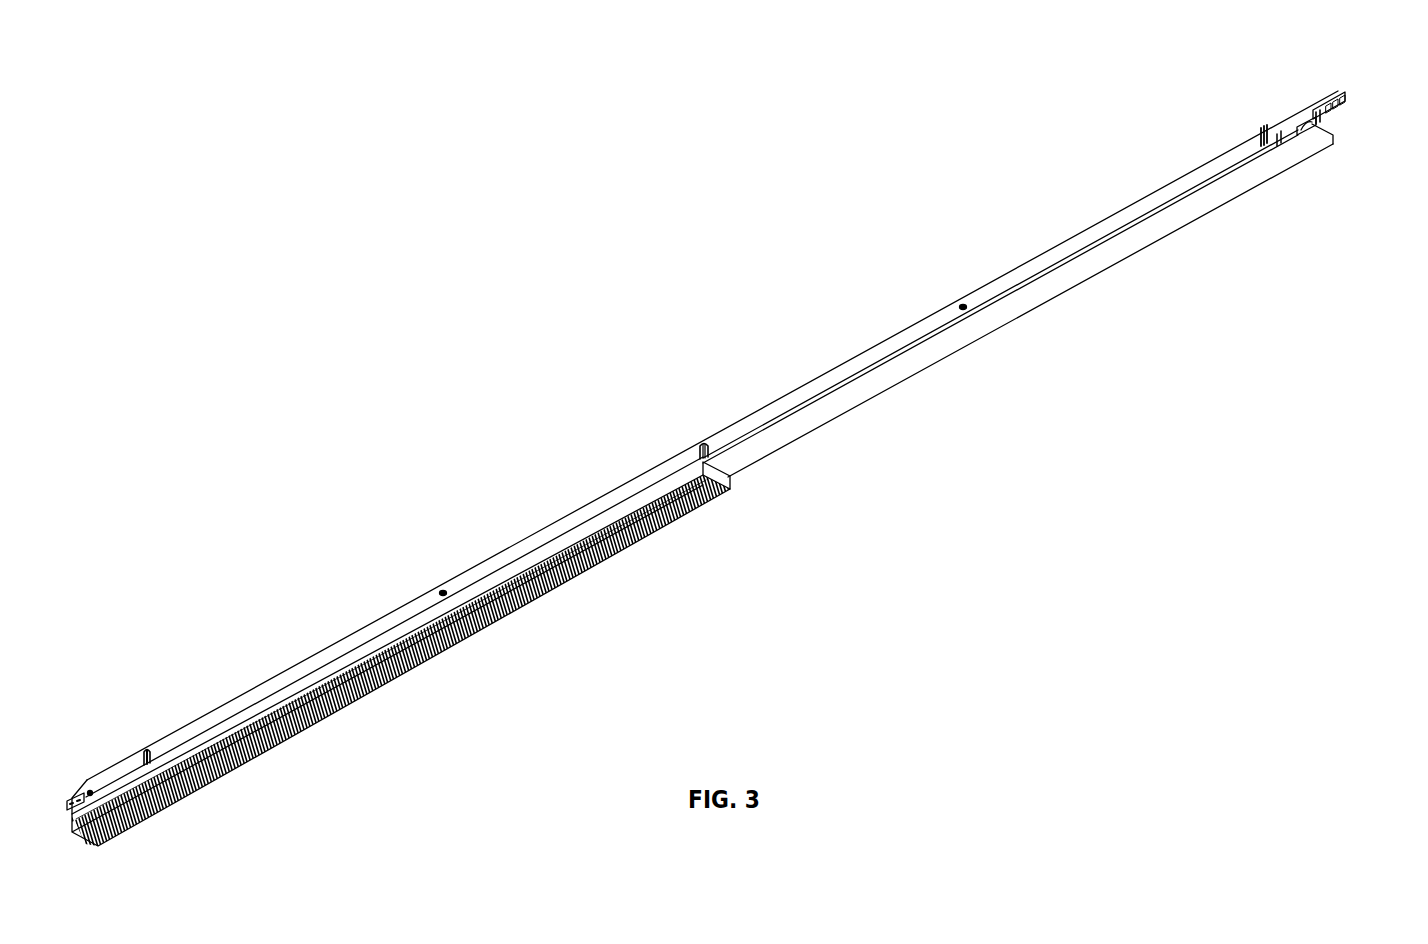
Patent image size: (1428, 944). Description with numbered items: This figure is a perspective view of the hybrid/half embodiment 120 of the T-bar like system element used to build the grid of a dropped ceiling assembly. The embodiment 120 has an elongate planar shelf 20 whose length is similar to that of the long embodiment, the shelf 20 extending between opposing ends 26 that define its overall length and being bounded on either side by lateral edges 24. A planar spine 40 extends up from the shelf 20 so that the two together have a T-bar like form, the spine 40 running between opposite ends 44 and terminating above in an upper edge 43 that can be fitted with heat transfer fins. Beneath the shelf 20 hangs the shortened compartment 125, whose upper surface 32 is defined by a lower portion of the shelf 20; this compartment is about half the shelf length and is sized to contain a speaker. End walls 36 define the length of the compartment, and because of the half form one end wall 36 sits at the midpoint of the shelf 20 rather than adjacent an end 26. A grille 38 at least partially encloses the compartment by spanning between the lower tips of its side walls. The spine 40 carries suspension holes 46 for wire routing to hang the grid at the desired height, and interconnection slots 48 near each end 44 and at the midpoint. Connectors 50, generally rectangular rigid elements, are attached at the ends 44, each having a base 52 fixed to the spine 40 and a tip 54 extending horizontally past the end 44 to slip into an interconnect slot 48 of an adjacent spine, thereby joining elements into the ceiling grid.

The hybrid/half embodiment 120 is at (268, 306).
The shelf 20 is at (946, 368).
The lateral edges 24 is at (792, 411).
The opposing ends 26 is at (87, 849).
The upper surface 32 is at (820, 417).
The end walls 36 is at (734, 486).
The grille 38 is at (230, 765).
The spine 40 is at (999, 266).
The upper edge 43 is at (1043, 255).
The opposite ends 44 is at (110, 773).
The suspension holes 46 is at (443, 591).
The interconnection slots 48 is at (150, 752).
The connectors 50 is at (75, 800).
The base 52 is at (1290, 121).
The tip 54 is at (1348, 103).
The shortened compartment 125 is at (500, 576).